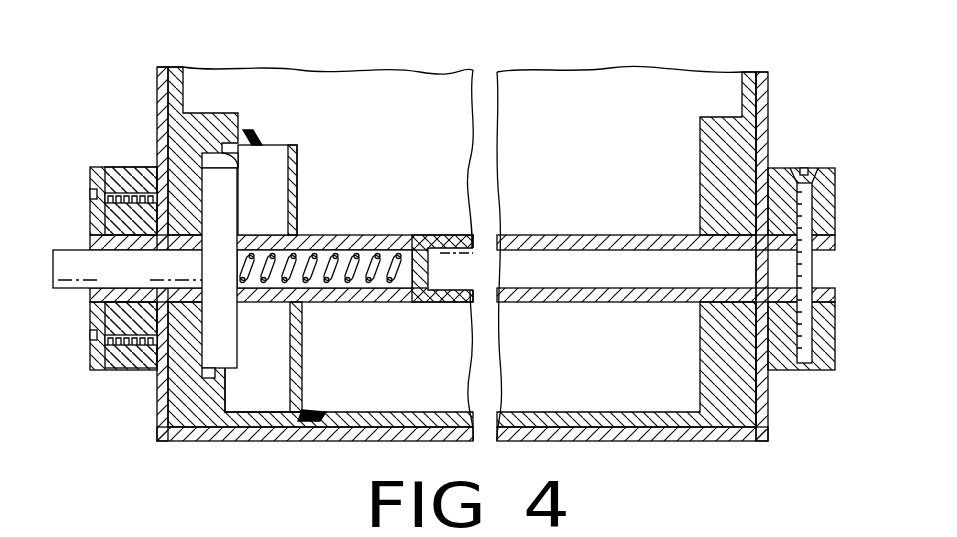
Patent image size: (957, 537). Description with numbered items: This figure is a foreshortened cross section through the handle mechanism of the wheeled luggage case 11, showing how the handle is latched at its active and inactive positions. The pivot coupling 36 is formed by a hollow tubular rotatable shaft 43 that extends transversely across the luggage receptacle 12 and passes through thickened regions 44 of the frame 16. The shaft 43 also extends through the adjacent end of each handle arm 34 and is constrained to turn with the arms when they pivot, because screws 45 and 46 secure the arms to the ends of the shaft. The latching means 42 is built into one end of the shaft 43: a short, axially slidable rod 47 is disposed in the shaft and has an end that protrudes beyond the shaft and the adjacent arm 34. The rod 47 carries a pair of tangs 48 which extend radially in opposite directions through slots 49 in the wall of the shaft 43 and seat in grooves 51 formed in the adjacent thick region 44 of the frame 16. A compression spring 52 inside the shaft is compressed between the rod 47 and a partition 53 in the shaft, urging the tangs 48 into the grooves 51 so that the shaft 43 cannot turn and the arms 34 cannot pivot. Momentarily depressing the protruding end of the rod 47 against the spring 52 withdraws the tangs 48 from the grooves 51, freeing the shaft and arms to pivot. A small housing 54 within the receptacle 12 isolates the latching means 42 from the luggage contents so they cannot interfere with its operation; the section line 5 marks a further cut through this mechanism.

The section line 5- 5 is at (233, 60).
The wheeled luggage case 11 is at (805, 110).
The luggage receptacle 12 is at (712, 444).
The frame 16 is at (742, 86).
The arm 34 is at (143, 370).
The pivot coupling 36 is at (572, 216).
The latching means 42 is at (258, 200).
The rotatable shaft 43 is at (578, 304).
The thickened region 44 is at (192, 130).
The screw 45 is at (808, 213).
The screw 46 is at (125, 193).
The rod 47 is at (146, 279).
The tang 48 is at (237, 186).
The slot 49 is at (275, 240).
The groove 51 is at (240, 162).
The compression spring 52 is at (400, 288).
The partition 53 is at (445, 247).
The housing 54 is at (302, 373).